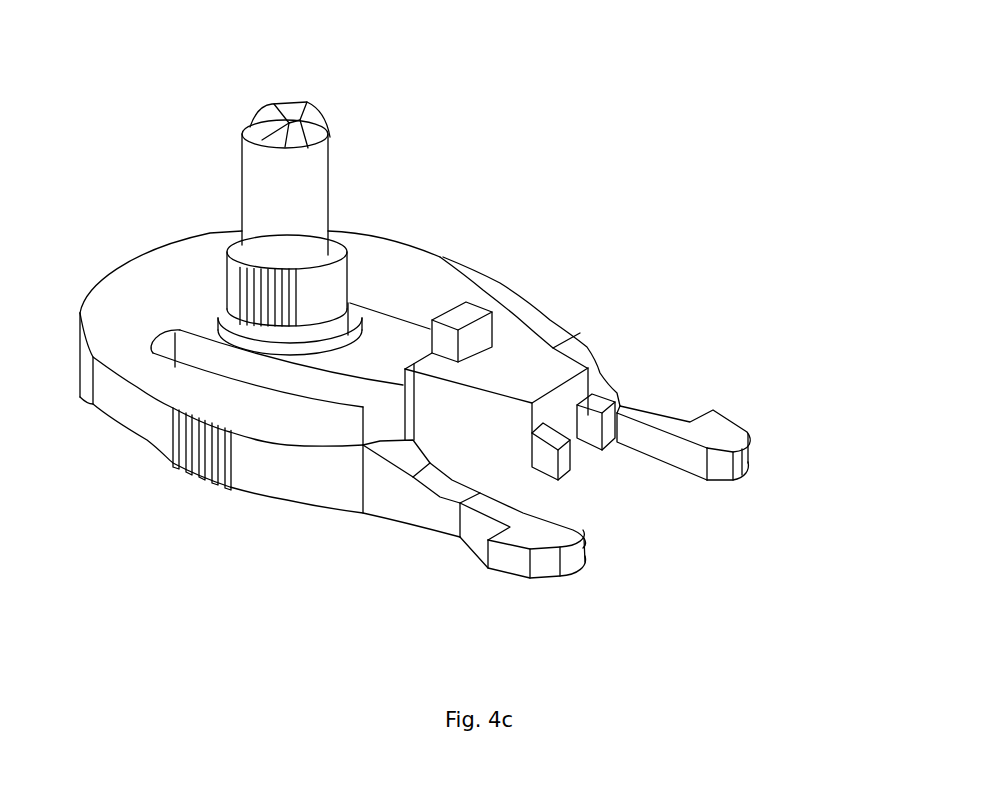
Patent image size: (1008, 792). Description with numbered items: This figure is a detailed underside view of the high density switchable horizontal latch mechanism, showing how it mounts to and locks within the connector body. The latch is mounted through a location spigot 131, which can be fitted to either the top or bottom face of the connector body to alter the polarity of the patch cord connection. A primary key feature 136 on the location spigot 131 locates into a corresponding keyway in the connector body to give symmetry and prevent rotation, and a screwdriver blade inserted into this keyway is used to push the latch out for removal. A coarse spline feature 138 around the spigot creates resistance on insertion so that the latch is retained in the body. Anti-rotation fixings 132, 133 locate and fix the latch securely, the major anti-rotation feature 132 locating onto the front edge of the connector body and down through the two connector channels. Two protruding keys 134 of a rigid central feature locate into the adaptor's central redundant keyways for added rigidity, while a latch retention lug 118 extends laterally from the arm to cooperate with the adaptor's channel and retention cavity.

The location spigot 131 is at (305, 173).
The primary key feature 136 is at (245, 117).
The coarse spline feature 138 is at (235, 283).
The major anti-rotation feature 132 is at (341, 268).
The anti-rotation fixing 133 is at (240, 233).
The protruding keys 134 is at (586, 480).
The latch retention lug 118 is at (695, 404).